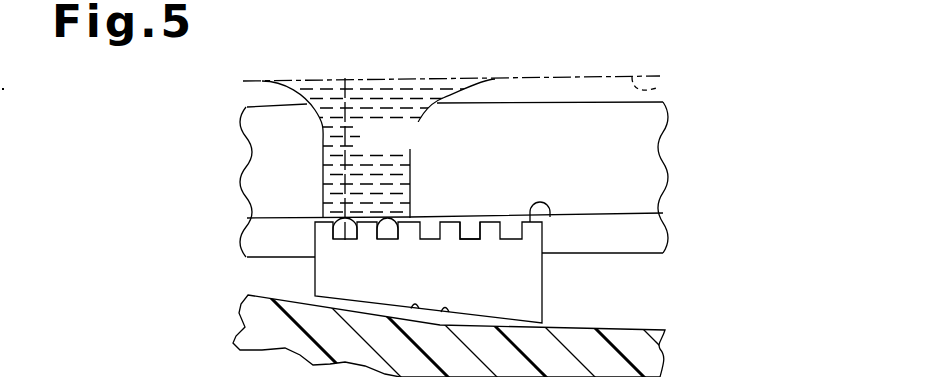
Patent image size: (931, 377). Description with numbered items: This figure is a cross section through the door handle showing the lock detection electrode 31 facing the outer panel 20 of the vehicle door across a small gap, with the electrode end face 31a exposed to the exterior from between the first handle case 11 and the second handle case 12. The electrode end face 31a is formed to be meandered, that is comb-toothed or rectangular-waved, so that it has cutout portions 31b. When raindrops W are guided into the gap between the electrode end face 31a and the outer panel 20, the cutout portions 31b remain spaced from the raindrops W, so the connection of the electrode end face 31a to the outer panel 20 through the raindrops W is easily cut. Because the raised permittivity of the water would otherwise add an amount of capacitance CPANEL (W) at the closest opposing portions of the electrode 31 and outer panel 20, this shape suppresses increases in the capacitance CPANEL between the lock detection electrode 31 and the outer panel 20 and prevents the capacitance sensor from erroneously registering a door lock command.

The outer panel 20 is at (657, 89).
The first handle case 11 is at (663, 155).
The second handle case 12 is at (664, 358).
The lock detection electrode 31 is at (543, 303).
The electrode end face 31a is at (550, 217).
The cutout portions 31b is at (470, 228).
The raindrops W is at (323, 166).
The capacitance C_PANEL CPANEL is at (406, 136).